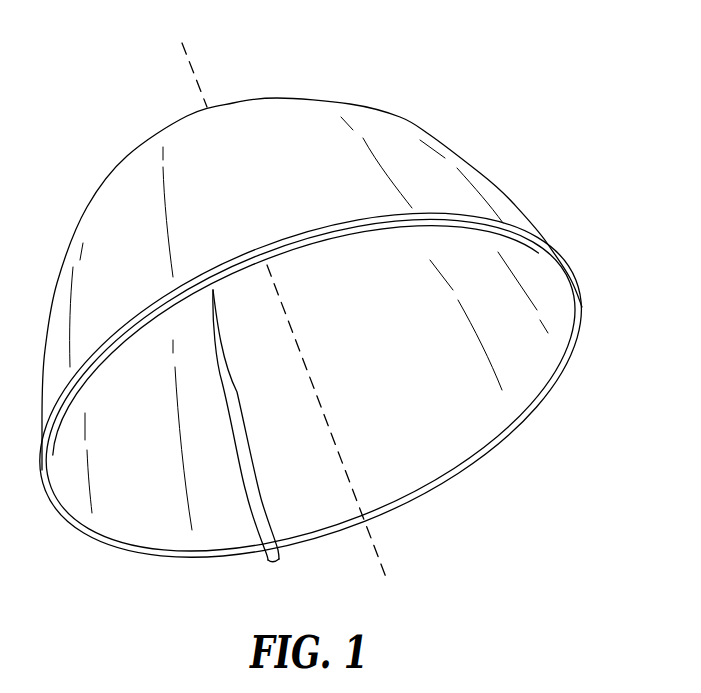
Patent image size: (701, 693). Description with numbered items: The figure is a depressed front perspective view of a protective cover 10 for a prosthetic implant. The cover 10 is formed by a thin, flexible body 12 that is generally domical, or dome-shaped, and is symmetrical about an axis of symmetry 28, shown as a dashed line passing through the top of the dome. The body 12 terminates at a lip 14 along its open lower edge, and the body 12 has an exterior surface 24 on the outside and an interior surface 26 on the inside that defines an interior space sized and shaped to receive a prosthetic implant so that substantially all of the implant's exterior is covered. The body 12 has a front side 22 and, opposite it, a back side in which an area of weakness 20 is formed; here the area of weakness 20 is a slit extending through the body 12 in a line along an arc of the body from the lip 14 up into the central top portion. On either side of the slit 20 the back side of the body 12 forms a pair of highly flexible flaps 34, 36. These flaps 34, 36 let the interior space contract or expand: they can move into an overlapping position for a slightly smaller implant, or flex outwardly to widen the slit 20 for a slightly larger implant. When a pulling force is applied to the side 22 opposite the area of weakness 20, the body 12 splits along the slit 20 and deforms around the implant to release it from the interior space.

The protective cover 10 is at (534, 84).
The body 12 is at (128, 155).
The lip 14 is at (475, 465).
The area of weakness 20 is at (249, 449).
The front side 22 is at (305, 237).
The exterior surface 24 is at (128, 272).
The interior surface 26 is at (428, 350).
The axis of symmetry 28 is at (189, 60).
The flap 34 is at (300, 507).
The flap 36 is at (225, 518).